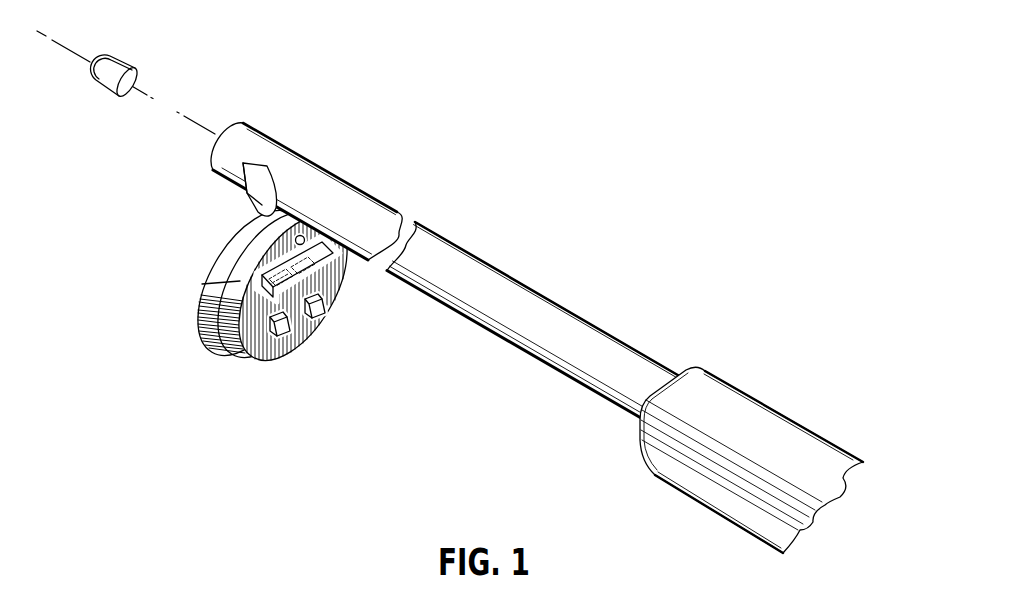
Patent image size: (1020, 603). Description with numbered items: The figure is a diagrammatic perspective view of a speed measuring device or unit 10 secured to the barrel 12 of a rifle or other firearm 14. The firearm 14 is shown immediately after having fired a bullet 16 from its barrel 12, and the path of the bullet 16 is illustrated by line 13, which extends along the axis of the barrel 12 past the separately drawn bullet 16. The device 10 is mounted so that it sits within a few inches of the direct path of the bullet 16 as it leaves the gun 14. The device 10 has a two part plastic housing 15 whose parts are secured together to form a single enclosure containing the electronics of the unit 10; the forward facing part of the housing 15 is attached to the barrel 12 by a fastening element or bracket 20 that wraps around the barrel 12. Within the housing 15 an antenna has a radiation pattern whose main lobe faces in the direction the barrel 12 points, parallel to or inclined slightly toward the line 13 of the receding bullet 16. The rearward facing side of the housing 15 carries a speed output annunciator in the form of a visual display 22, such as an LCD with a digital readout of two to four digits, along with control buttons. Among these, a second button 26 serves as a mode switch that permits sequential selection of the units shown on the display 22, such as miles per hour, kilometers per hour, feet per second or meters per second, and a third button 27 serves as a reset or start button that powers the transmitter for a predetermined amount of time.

The speed measuring device 10 is at (187, 300).
The barrel 12 is at (438, 276).
The line 13 is at (51, 33).
The firearm 14 is at (775, 384).
The housing 15 is at (229, 334).
The bullet 16 is at (130, 62).
The bracket 20 is at (258, 192).
The visual display 22 is at (324, 262).
The second button 26 is at (290, 326).
The third button 27 is at (327, 309).